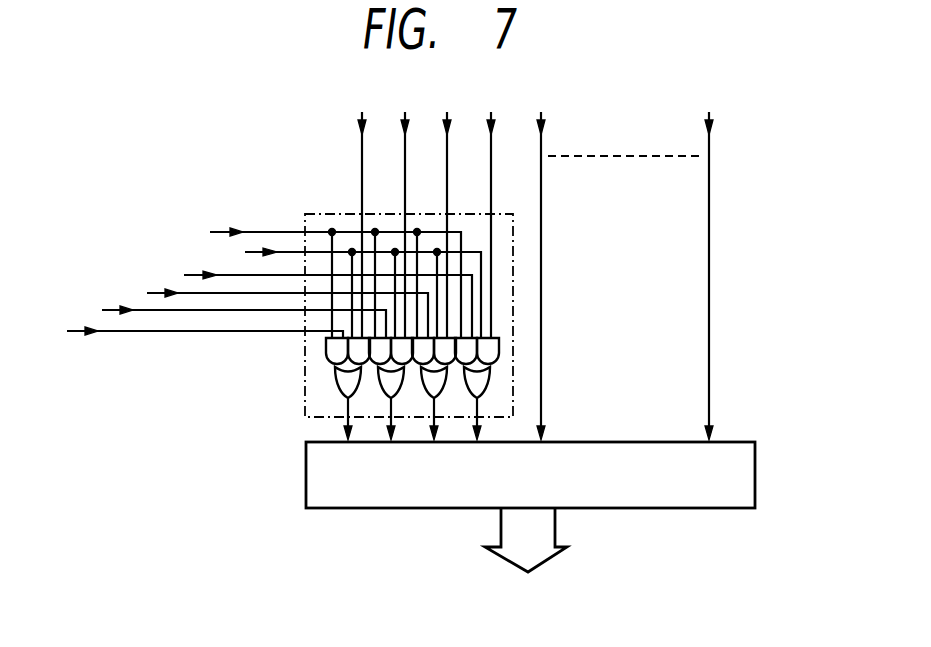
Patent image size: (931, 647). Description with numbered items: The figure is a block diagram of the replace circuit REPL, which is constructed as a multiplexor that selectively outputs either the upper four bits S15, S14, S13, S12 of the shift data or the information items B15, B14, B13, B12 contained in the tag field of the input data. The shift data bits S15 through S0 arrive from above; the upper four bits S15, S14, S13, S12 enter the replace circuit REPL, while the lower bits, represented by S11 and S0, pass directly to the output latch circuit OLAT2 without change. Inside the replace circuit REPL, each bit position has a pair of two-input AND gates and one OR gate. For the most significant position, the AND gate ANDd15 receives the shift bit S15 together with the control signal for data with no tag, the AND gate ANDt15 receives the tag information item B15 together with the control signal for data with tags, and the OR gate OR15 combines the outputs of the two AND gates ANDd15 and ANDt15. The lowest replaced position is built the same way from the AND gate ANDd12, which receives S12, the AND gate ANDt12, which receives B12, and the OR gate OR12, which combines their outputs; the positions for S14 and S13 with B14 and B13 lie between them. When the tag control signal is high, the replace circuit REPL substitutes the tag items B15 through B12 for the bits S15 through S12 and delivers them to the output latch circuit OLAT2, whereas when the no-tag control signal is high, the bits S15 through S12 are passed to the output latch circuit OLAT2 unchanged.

The shift data bit S15 is at (367, 210).
The shift data bit S14 is at (408, 210).
The shift data bit S13 is at (447, 210).
The shift data bit S12 is at (494, 210).
The shift data bit S11 is at (539, 261).
The shift data bit S0 is at (707, 259).
The tag field information item B12 is at (312, 300).
The tag field information item B13 is at (270, 309).
The tag field information item B14 is at (226, 318).
The tag field information item B15 is at (189, 332).
The AND gate ANDd15 is at (346, 338).
The AND gate ANDt15 is at (326, 356).
The OR gate OR15 is at (334, 385).
The replace circuit REPL is at (306, 427).
The AND gate ANDt12 is at (480, 338).
The AND gate ANDd12 is at (498, 342).
The OR gate OR12 is at (491, 381).
The output latch circuit OLAT2 is at (738, 510).